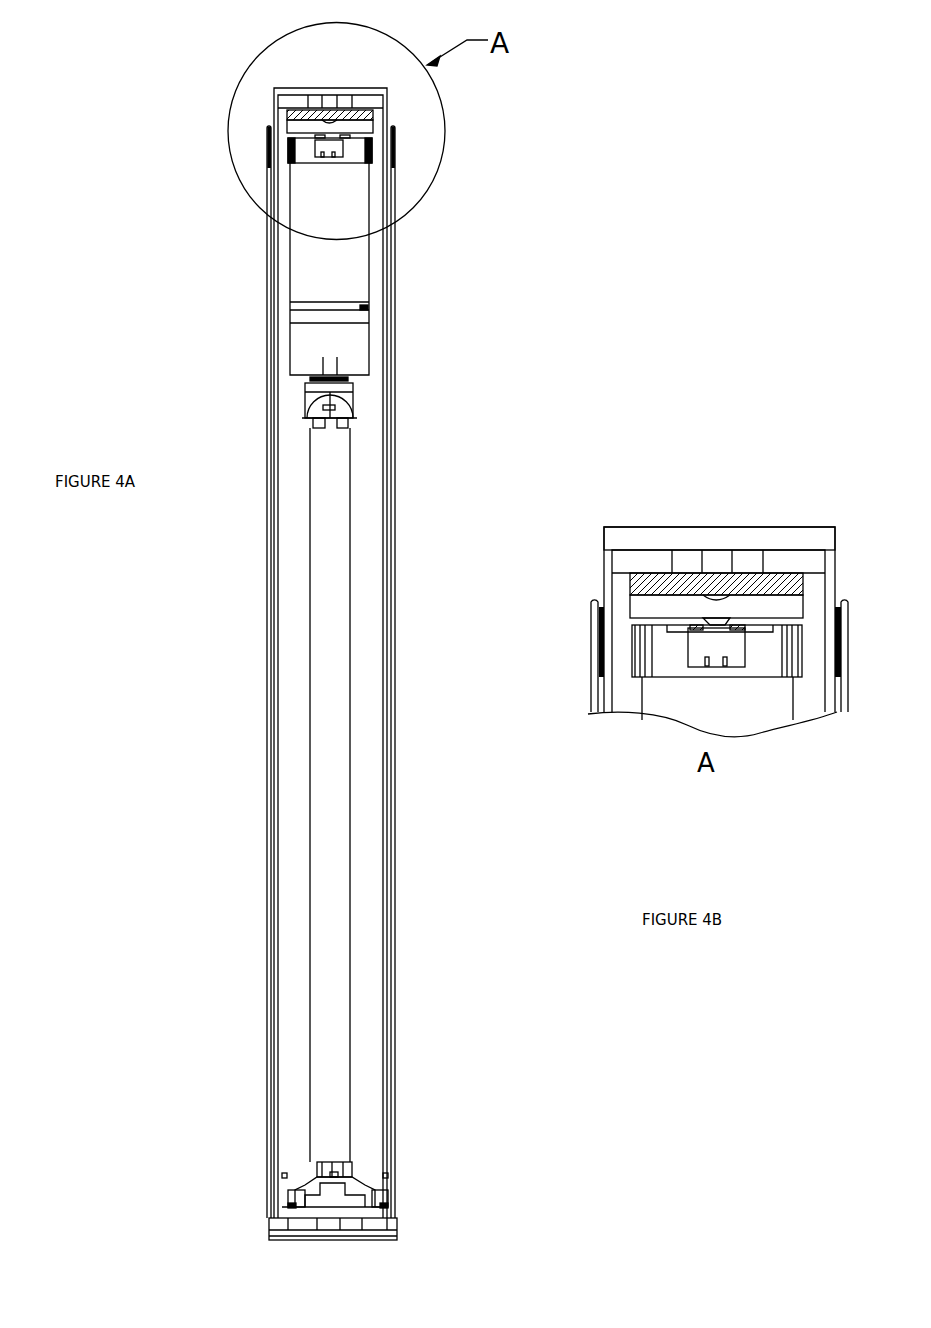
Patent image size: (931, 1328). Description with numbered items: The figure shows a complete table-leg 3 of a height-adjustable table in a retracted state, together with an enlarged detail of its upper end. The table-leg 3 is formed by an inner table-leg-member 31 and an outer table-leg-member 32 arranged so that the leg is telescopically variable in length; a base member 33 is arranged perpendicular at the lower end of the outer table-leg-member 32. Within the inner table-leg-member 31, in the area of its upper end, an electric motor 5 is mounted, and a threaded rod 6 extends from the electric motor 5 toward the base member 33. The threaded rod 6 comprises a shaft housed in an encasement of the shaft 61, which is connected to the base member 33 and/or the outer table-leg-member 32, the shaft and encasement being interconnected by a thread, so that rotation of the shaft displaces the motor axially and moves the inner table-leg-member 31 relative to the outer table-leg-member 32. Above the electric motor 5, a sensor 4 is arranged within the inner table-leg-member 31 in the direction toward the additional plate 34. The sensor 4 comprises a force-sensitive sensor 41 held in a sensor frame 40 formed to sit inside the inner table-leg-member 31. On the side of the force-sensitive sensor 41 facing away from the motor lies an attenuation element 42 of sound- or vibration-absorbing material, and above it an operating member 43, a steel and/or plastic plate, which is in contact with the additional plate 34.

In FIG. 4A, the table-leg 3 is at (250, 740).
In FIG. 4B, the sensor 4 is at (625, 625).
In FIG. 4A, the electric motor 5 is at (323, 268).
In FIG. 4A, the threaded rod 6 is at (309, 482).
In FIG. 4A, the encasement of the shaft 61 is at (333, 536).
In FIG. 4B, the inner table-leg-member 31 is at (603, 547).
In FIG. 4A, the outer table-leg-member 32 is at (397, 307).
In FIG. 4B, the outer table-leg-member 32 is at (593, 623).
In FIG. 4A, the base member 33 is at (365, 1243).
In FIG. 4B, the additional plate 34 is at (707, 527).
In FIG. 4B, the sensor frame 40 is at (665, 652).
In FIG. 4B, the force-sensitive sensor 41 is at (723, 627).
In FIG. 4B, the attenuation element 42 is at (668, 605).
In FIG. 4B, the operating member 43 is at (690, 580).